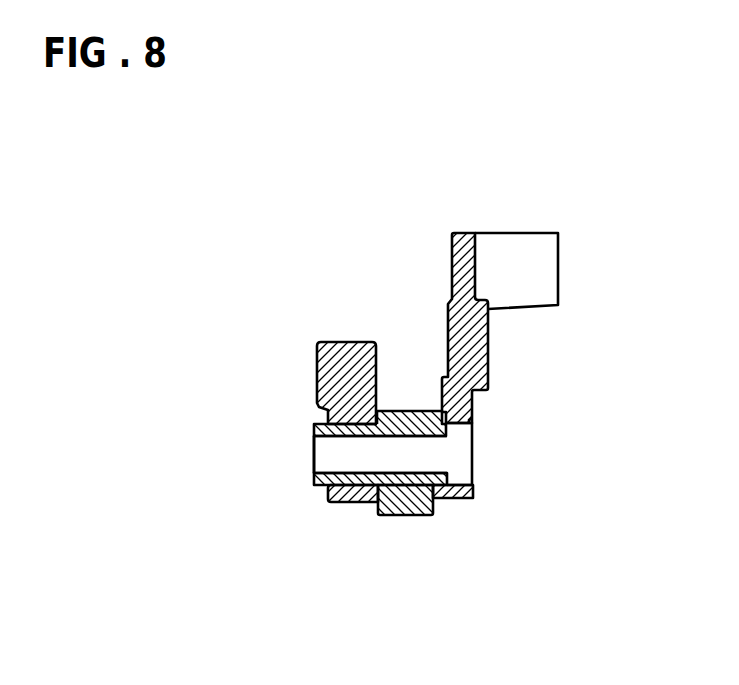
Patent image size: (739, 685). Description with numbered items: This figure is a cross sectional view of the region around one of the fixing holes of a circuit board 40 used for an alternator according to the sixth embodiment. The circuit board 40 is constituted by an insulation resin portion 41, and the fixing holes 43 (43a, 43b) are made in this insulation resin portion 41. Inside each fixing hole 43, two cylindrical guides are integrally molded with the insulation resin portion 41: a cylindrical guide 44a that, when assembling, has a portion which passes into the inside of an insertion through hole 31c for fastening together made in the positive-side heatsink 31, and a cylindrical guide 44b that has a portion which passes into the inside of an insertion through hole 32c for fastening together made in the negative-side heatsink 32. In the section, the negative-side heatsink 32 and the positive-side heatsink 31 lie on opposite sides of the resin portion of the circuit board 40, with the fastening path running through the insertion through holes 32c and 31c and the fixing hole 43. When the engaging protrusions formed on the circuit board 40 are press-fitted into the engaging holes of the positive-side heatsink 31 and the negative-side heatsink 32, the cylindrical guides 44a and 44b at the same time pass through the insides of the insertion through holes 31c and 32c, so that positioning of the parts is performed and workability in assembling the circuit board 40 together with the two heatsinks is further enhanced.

The positive-side heatsink 31 is at (450, 253).
The insertion through hole 31c is at (463, 425).
The negative-side heatsink 32 is at (347, 342).
The insertion through hole 32c is at (322, 493).
The circuit board 40 is at (416, 504).
The insulation resin portion 41 is at (423, 515).
The fixing hole 43 is at (269, 472).
The fixing hole 43a is at (459, 454).
The fixing hole 43b is at (380, 454).
The cylindrical guide 44a is at (470, 483).
The cylindrical guide 44b is at (313, 432).